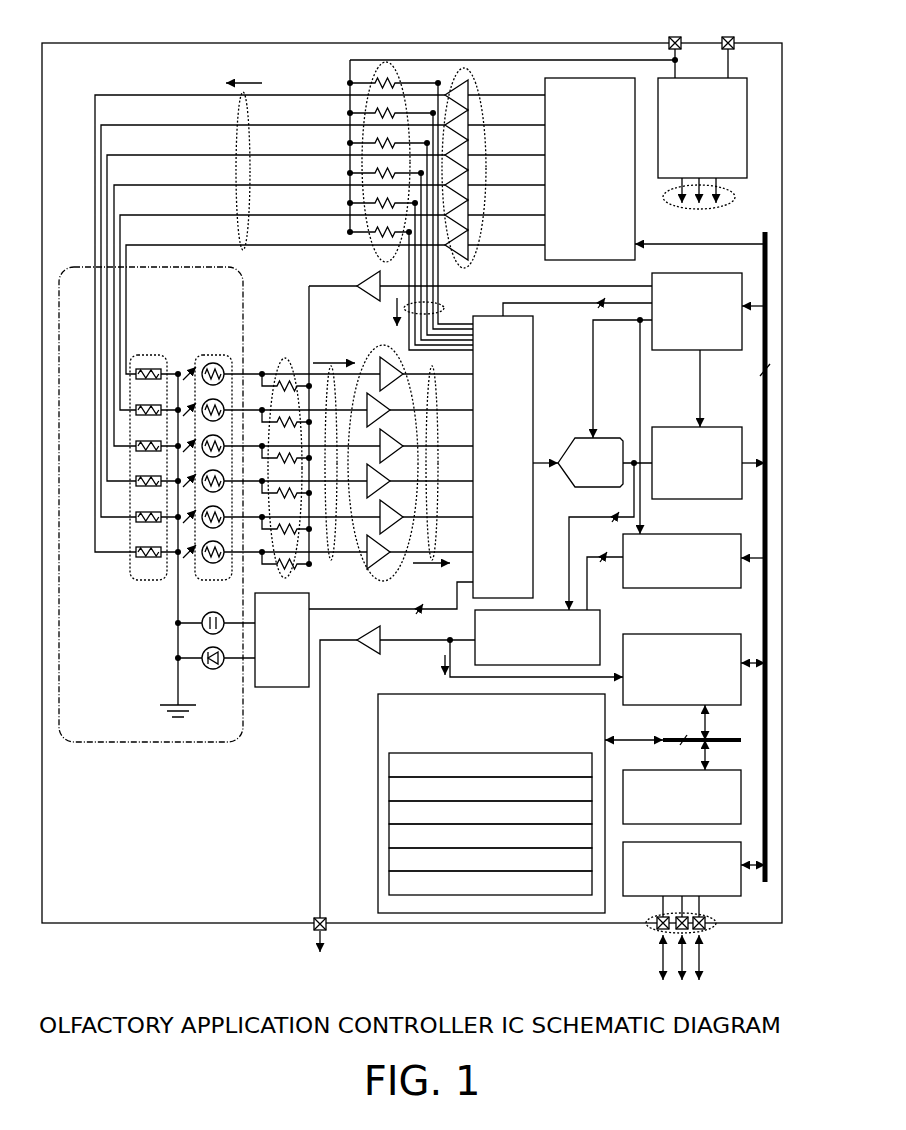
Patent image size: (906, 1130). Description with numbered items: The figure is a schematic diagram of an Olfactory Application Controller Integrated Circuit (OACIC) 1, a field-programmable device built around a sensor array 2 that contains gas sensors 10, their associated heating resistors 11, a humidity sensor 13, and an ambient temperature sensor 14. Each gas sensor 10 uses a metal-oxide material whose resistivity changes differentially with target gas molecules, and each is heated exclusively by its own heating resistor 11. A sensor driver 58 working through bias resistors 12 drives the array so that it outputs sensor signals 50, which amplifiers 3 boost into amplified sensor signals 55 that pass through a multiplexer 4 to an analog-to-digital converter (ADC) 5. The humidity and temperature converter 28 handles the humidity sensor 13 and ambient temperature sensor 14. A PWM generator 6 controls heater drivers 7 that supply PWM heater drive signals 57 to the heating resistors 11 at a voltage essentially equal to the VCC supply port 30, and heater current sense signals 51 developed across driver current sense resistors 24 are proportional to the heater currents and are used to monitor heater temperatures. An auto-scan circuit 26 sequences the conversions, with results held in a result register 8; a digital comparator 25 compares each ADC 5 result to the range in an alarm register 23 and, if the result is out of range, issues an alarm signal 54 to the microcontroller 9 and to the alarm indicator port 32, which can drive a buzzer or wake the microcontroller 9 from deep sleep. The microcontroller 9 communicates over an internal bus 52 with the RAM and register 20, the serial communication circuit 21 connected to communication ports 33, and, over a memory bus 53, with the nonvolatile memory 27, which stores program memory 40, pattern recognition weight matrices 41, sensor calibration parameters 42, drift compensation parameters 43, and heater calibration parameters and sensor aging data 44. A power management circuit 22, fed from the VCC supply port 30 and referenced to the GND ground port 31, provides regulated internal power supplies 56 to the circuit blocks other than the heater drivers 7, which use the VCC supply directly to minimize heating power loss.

The Olfactory Application Controller Integrated Circuit (OACIC) 1 is at (412, 483).
The sensor array 2 is at (183, 742).
The amplifiers 3 is at (364, 570).
The multiplexer 4 is at (515, 457).
The analog-to-digital converter (ADC) 5 is at (605, 524).
The pulse-width-modulation (PWM) generator 6 is at (590, 169).
The heater drivers 7 is at (485, 98).
The result register 8 is at (697, 463).
The microcontroller 9 is at (682, 669).
The gas sensors 10 is at (206, 356).
The heating resistors 11 is at (130, 586).
The bias resistors 12 is at (285, 358).
The humidity sensor 13 is at (205, 613).
The ambient temperature sensor 14 is at (222, 666).
The random-access memory (RAM) and register 20 is at (682, 797).
The serial communication circuit 21 is at (682, 879).
The power management circuit 22 is at (548, 98).
The alarm register 23 is at (664, 572).
The driver current sense resistors 24 is at (362, 78).
The digital comparator 25 is at (501, 643).
The auto-scan circuit 26 is at (622, 403).
The nonvolatile memory 27 is at (491, 803).
The humidity and temperature converter 28 is at (364, 634).
The VCC supply port 30 is at (686, 50).
The GND ground port 31 is at (739, 50).
The alarm indicator port 32 is at (314, 918).
The communication ports 33 is at (650, 931).
The program memory 40 is at (389, 771).
The pattern recognition weight matrices 41 is at (389, 795).
The sensor calibration parameters 42 is at (389, 818).
The drift compensation parameters 43 is at (389, 842).
The heater calibration parameters and sensor aging data 44 is at (389, 865).
The sensor signals 50 is at (333, 362).
The heater current sense signals 51 is at (395, 316).
The internal bus 52 is at (762, 382).
The memory bus 53 is at (684, 737).
The alarm signal 54 is at (443, 666).
The amplified sensor signals 55 is at (441, 566).
The internal power supplies 56 is at (728, 206).
The PWM heater drive signals 57 is at (243, 83).
The sensor driver 58 is at (365, 280).